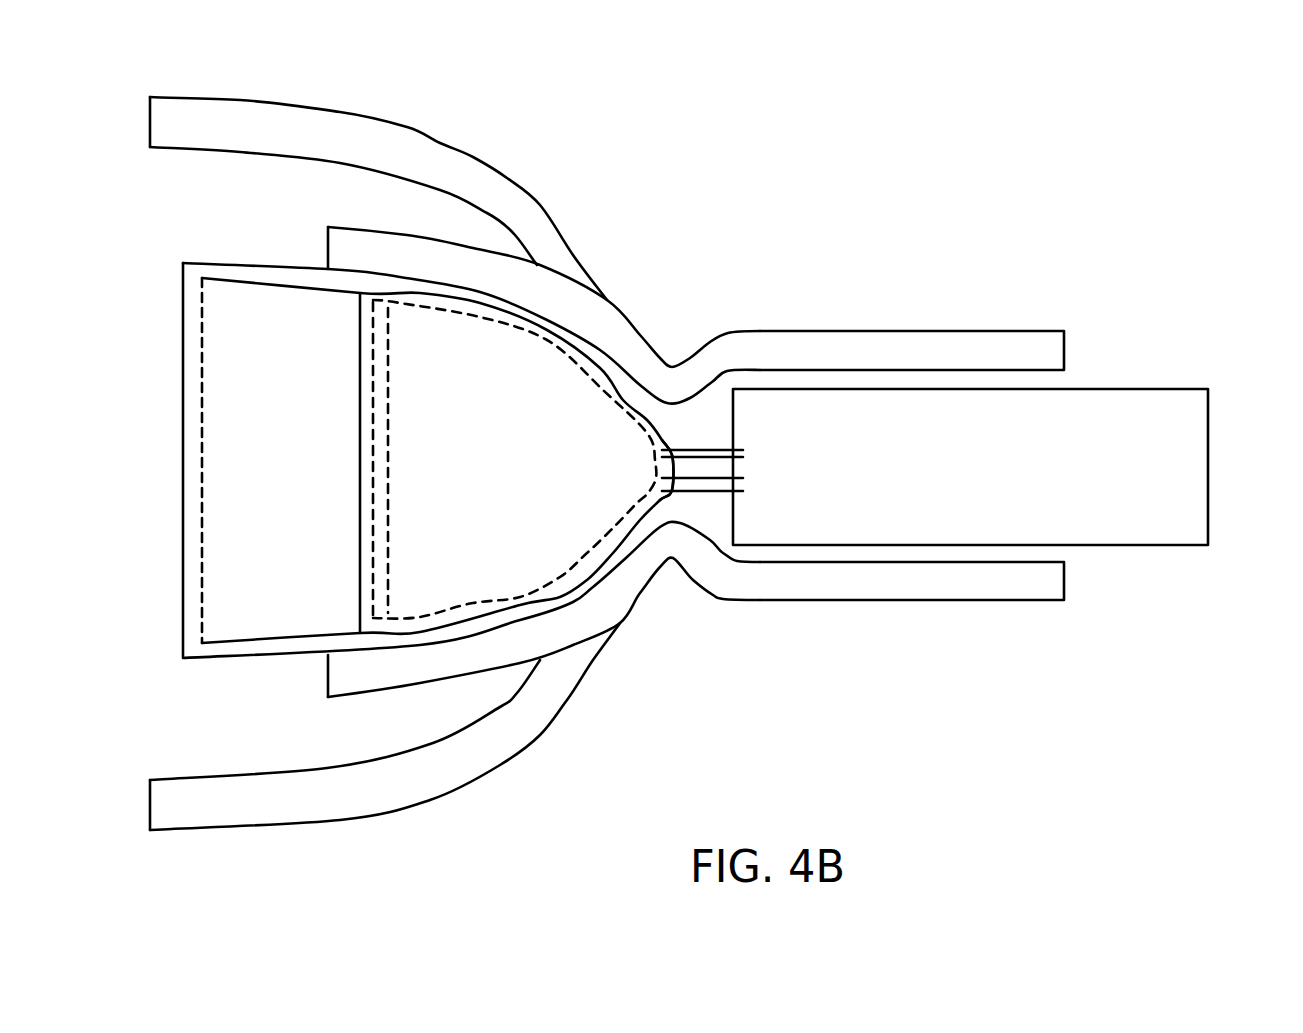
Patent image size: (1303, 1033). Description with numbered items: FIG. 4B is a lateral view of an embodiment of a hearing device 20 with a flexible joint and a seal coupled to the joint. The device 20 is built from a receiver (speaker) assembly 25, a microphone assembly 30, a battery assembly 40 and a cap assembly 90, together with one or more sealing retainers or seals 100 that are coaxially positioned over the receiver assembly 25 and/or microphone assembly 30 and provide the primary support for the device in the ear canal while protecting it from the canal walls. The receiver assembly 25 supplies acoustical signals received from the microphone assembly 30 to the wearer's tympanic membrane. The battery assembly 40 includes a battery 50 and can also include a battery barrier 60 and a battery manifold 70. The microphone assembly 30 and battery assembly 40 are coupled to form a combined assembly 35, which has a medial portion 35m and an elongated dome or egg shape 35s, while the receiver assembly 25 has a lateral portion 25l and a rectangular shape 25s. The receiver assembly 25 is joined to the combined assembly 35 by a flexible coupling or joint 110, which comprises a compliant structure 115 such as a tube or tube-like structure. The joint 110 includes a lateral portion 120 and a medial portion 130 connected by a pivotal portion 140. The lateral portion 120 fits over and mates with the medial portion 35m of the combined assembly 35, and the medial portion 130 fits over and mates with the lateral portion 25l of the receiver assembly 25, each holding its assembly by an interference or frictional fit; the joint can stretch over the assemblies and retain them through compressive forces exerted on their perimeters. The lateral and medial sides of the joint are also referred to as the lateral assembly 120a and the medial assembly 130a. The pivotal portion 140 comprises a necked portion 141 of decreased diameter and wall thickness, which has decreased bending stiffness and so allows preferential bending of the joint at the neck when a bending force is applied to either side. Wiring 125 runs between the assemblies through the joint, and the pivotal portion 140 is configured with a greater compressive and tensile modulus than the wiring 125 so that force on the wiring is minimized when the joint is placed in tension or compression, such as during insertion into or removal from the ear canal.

The hearing device 20 is at (407, 54).
The receiver assembly 25 is at (1037, 486).
The lateral portion of receiver assembly 25l is at (800, 410).
The shape of receiver assembly 25s is at (1210, 463).
The microphone assembly 30 is at (294, 476).
The combined assembly 35 is at (300, 603).
The medial portion of combined assembly 35m is at (577, 580).
The shape of combined assembly 35s is at (520, 597).
The battery assembly 40 is at (517, 476).
The battery 50 is at (514, 459).
The battery barrier 60 is at (388, 365).
The battery manifold 70 is at (652, 495).
The cap assembly 90 is at (183, 385).
The sealing retainer 100 is at (210, 107).
The flexible coupling 110 is at (1033, 588).
The compliant structure 115 is at (930, 600).
The lateral portion of joint 120 is at (470, 270).
The lateral assembly 120a is at (517, 352).
The wiring 125 is at (717, 483).
The medial portion of joint 130 is at (1002, 348).
The medial assembly 130a is at (1148, 400).
The pivotal portion 140 is at (673, 380).
The necked portion 141 is at (663, 547).